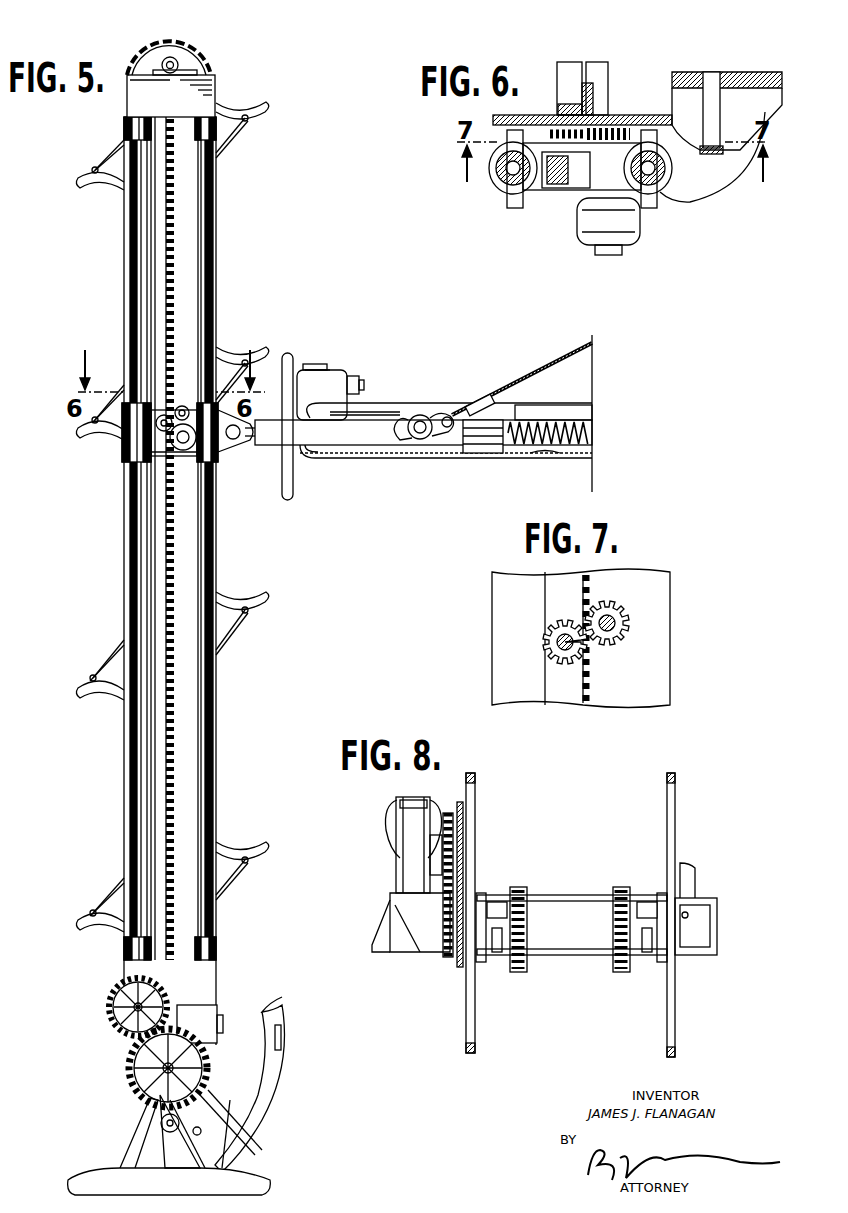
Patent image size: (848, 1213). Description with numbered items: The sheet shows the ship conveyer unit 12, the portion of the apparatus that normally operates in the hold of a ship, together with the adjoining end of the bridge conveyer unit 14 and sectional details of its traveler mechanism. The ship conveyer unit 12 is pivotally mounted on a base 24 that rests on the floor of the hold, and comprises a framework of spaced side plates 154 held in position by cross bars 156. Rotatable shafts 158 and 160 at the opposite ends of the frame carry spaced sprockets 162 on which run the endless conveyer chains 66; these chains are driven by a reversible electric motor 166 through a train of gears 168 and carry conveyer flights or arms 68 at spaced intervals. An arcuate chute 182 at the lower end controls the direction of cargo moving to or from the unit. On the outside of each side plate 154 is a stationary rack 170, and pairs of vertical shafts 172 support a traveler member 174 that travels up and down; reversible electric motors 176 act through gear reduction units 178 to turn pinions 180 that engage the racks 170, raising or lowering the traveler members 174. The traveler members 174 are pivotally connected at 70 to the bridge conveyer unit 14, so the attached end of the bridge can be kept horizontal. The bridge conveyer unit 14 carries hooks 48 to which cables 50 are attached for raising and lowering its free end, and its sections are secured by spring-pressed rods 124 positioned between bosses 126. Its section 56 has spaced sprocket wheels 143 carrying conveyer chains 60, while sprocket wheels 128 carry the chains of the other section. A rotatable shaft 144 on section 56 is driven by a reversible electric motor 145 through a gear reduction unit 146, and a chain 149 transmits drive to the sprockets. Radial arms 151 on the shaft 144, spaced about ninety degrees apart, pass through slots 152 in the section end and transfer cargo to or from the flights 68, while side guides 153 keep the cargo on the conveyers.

In FIG. 5, the ship conveyer unit 12 is at (218, 770).
In FIG. 5, the bridge conveyer unit 14 is at (522, 462).
In FIG. 5, the base 24 is at (250, 1185).
In FIG. 5, the hook 48 is at (414, 414).
In FIG. 5, the cable 50 is at (540, 365).
In FIG. 8, the section 56 is at (568, 895).
In FIG. 5, the conveyer chain 60 is at (378, 462).
In FIG. 8, the conveyer chain 60 is at (612, 948).
In FIG. 5, the conveyer chain 66 is at (200, 71).
In FIG. 5, the conveyer flight 68 is at (258, 610).
In FIG. 5, the pivot 70 is at (233, 440).
In FIG. 6, the pivot 70 is at (714, 155).
In FIG. 5, the spring-pressed rod 124 is at (593, 433).
In FIG. 5, the boss 126 is at (488, 440).
In FIG. 5, the sprocket wheel 128 is at (547, 460).
In FIG. 5, the sprocket wheel 143 is at (330, 452).
In FIG. 8, the sprocket wheel 143 is at (621, 974).
In FIG. 8, the rotatable shaft 144 is at (497, 903).
In FIG. 5, the reversible electric motor 145 is at (352, 378).
In FIG. 8, the reversible electric motor 145 is at (392, 818).
In FIG. 5, the gear reduction unit 146 is at (322, 368).
In FIG. 8, the gear reduction unit 146 is at (410, 847).
In FIG. 8, the chain 149 is at (481, 964).
In FIG. 5, the radial arm 151 is at (290, 493).
In FIG. 8, the radial arm 151 is at (476, 798).
In FIG. 8, the slot 152 is at (602, 898).
In FIG. 5, the side guide 153 is at (577, 413).
In FIG. 8, the side guide 153 is at (698, 876).
In FIG. 5, the side plate 154 is at (190, 296).
In FIG. 6, the side plate 154 is at (640, 115).
In FIG. 7, the side plate 154 is at (662, 672).
In FIG. 6, the cross bar 156 is at (596, 85).
In FIG. 5, the rotatable shaft 158 is at (180, 64).
In FIG. 5, the rotatable shaft 160 is at (135, 1100).
In FIG. 5, the sprocket 162 is at (185, 50).
In FIG. 5, the reversible electric motor 166 is at (197, 1020).
In FIG. 5, the train of gears 168 is at (135, 1080).
In FIG. 5, the stationary rack 170 is at (160, 298).
In FIG. 6, the stationary rack 170 is at (556, 115).
In FIG. 7, the stationary rack 170 is at (556, 610).
In FIG. 5, the shaft 172 is at (135, 227).
In FIG. 6, the shaft 172 is at (505, 186).
In FIG. 5, the traveler member 174 is at (123, 455).
In FIG. 6, the traveler member 174 is at (510, 196).
In FIG. 5, the reversible electric motor 176 is at (184, 450).
In FIG. 6, the reversible electric motor 176 is at (634, 240).
In FIG. 5, the gear reduction unit 178 is at (160, 416).
In FIG. 6, the gear reduction unit 178 is at (577, 178).
In FIG. 5, the pinion 180 is at (184, 406).
In FIG. 6, the pinion 180 is at (603, 116).
In FIG. 7, the pinion 180 is at (585, 612).
In FIG. 5, the arcuate chute 182 is at (276, 1077).